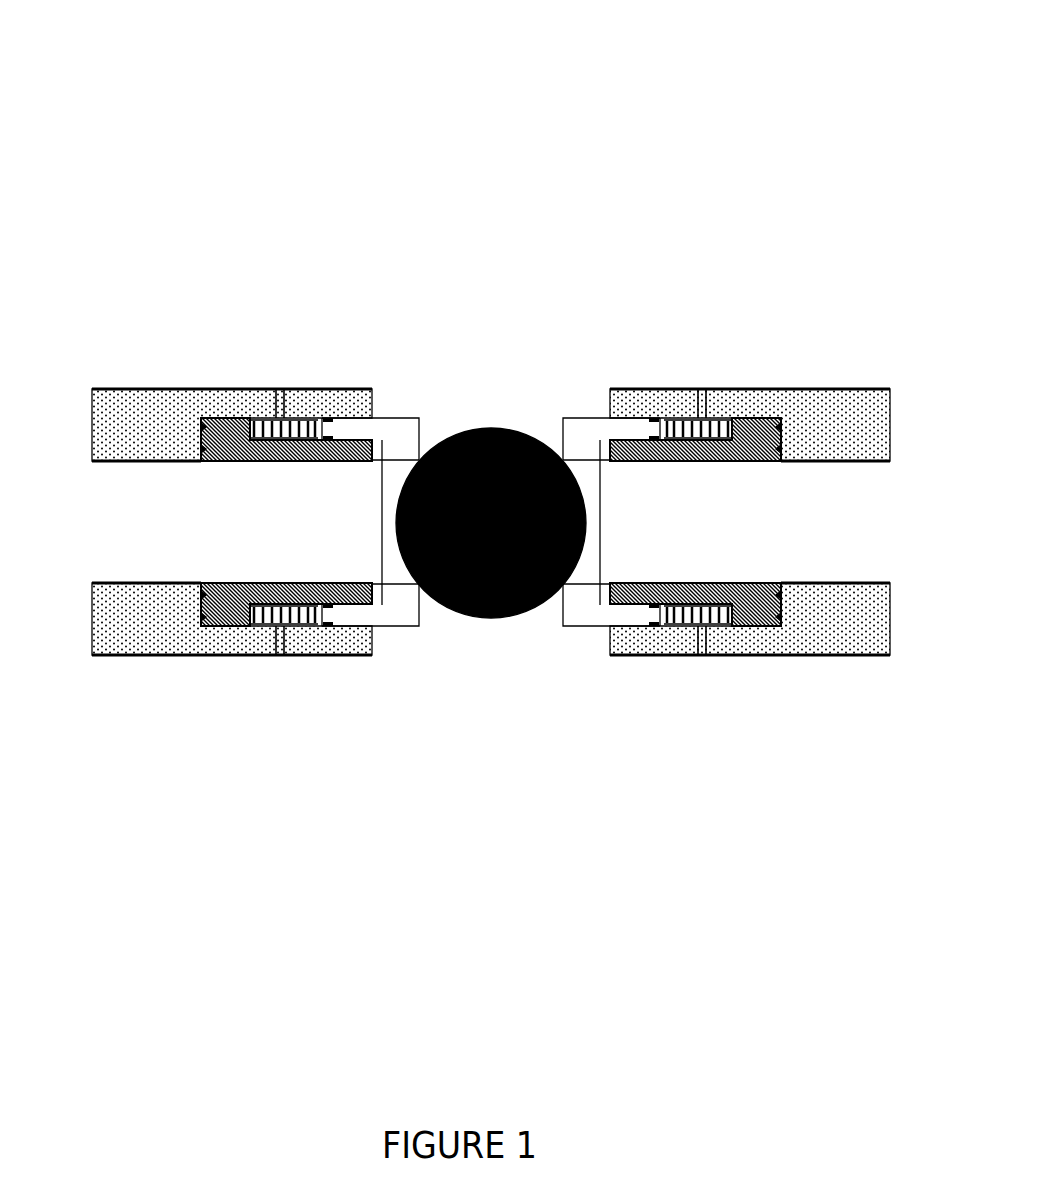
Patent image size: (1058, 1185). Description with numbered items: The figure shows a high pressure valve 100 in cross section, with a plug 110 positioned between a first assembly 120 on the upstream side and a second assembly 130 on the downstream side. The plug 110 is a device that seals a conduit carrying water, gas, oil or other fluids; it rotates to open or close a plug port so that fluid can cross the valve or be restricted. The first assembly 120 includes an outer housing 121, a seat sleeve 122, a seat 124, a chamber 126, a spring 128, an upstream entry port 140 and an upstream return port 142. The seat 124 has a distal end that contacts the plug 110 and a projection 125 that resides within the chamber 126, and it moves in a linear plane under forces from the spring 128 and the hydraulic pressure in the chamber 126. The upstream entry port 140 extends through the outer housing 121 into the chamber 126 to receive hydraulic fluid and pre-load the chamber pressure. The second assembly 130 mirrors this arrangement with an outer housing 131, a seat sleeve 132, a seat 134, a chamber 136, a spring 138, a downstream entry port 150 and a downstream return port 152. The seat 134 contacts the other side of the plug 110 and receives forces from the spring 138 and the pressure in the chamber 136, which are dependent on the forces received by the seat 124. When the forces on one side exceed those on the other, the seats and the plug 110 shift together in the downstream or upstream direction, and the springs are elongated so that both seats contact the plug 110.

The high pressure valve 100 is at (110, 97).
The plug 110 is at (475, 462).
The first assembly 120 is at (92, 413).
The outer housing 121 is at (157, 412).
The seat sleeve 122 is at (205, 613).
The seat 124 is at (397, 430).
The projection 125 is at (348, 430).
The chamber 126 is at (300, 613).
The spring 128 is at (248, 427).
The second assembly 130 is at (858, 637).
The outer housing 131 is at (810, 410).
The seat sleeve 132 is at (758, 627).
The seat 134 is at (568, 630).
The chamber 136 is at (733, 423).
The spring 138 is at (713, 422).
The upstream entry port 140 is at (278, 390).
The upstream return port 142 is at (273, 652).
The downstream entry port 150 is at (698, 418).
The downstream return port 152 is at (708, 657).